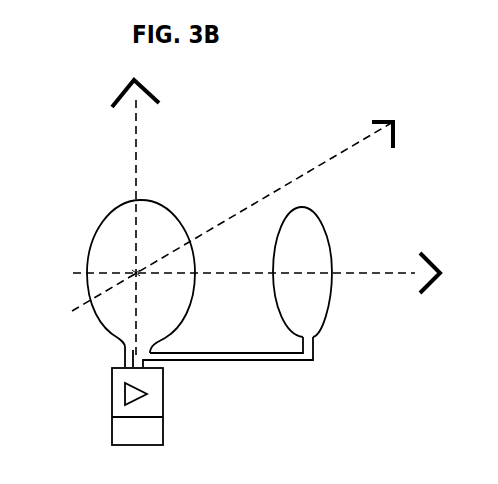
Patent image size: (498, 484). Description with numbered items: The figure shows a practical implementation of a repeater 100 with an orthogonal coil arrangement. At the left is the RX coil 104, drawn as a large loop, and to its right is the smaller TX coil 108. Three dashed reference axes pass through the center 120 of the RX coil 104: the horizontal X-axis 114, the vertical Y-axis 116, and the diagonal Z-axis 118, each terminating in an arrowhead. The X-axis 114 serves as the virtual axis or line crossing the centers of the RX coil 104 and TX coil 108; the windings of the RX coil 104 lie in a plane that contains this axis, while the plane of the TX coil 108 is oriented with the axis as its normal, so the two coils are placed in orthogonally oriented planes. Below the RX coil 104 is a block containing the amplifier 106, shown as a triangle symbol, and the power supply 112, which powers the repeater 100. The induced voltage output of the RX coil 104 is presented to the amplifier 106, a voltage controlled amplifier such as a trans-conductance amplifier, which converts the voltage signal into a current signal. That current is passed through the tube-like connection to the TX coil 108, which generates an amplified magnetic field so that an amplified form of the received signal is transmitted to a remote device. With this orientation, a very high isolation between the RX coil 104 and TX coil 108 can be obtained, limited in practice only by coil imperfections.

The repeater 100 is at (268, 103).
The RX coil 104 is at (92, 290).
The amplifier 106 is at (163, 400).
The TX coil 108 is at (318, 222).
The power supply 112 is at (163, 437).
The X-axis 114 is at (415, 271).
The Y-axis 116 is at (136, 122).
The Z-axis 118 is at (368, 140).
The center 120 is at (135, 287).